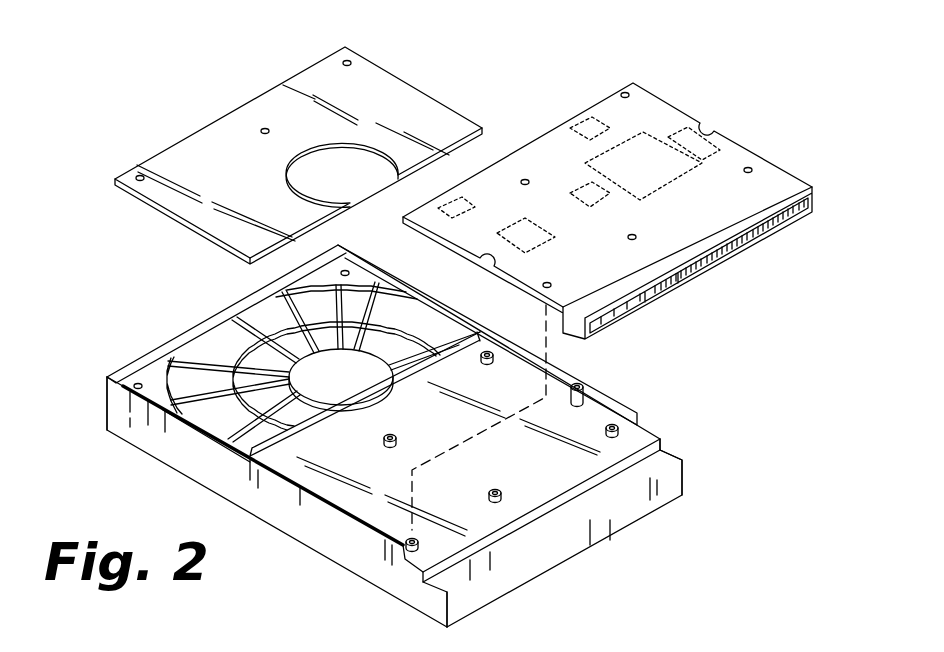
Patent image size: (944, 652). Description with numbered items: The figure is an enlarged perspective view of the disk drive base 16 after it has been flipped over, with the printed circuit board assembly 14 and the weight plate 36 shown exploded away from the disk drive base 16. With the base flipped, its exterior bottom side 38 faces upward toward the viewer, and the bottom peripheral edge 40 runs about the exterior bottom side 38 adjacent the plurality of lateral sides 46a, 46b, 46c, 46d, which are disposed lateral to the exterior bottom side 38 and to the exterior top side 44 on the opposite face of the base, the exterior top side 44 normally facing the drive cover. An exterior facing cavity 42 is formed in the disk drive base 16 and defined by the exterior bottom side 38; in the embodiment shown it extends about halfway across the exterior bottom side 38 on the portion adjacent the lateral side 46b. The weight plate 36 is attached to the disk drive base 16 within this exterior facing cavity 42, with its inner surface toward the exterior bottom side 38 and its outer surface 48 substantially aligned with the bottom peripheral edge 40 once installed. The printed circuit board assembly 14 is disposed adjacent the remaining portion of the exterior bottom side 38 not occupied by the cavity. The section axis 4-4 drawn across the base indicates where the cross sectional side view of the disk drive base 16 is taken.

The printed circuit board assembly 14 is at (610, 107).
The weight plate 36 is at (225, 133).
The outer surface 48 is at (390, 87).
The disk drive base 16 is at (312, 537).
The exterior bottom side 38 is at (263, 318).
The bottom peripheral edge 40 is at (172, 337).
The exterior facing cavity 42 is at (158, 373).
The exterior top side 44 is at (153, 462).
The lateral side 46a is at (363, 568).
The lateral side 46b is at (103, 399).
The lateral side 46c is at (677, 447).
The lateral side 46d is at (618, 523).
The axis 4- 4 is at (432, 291).